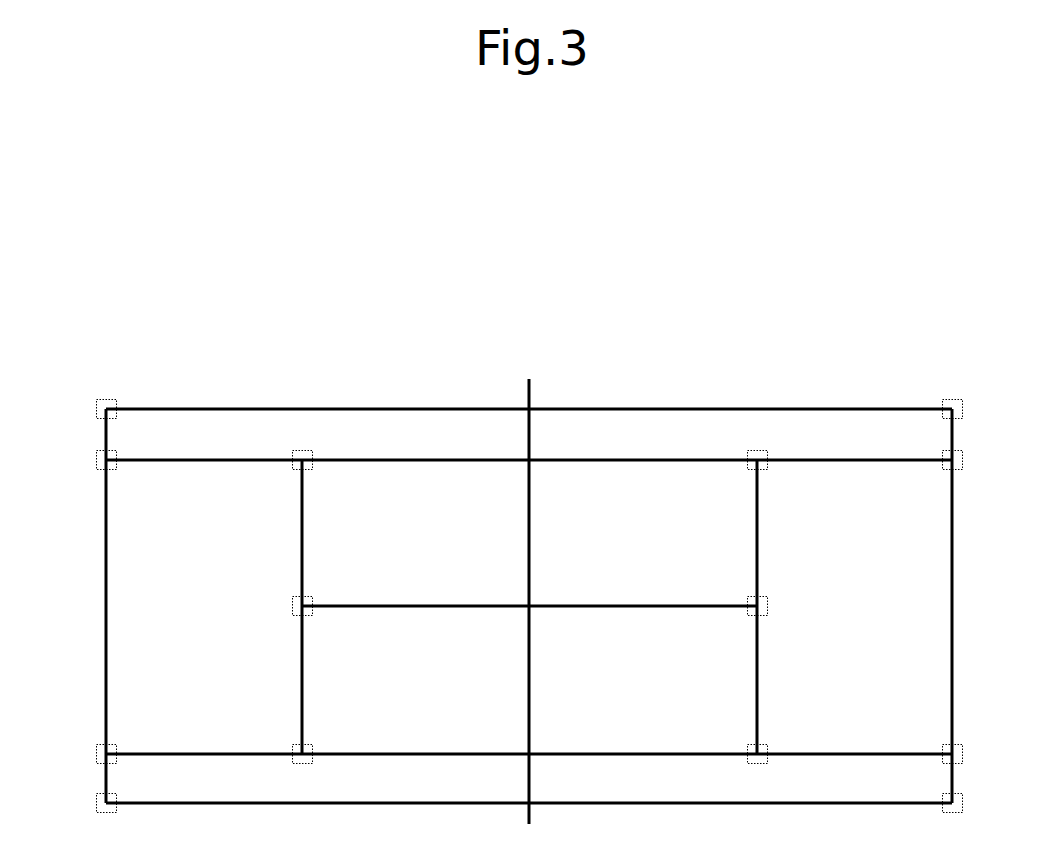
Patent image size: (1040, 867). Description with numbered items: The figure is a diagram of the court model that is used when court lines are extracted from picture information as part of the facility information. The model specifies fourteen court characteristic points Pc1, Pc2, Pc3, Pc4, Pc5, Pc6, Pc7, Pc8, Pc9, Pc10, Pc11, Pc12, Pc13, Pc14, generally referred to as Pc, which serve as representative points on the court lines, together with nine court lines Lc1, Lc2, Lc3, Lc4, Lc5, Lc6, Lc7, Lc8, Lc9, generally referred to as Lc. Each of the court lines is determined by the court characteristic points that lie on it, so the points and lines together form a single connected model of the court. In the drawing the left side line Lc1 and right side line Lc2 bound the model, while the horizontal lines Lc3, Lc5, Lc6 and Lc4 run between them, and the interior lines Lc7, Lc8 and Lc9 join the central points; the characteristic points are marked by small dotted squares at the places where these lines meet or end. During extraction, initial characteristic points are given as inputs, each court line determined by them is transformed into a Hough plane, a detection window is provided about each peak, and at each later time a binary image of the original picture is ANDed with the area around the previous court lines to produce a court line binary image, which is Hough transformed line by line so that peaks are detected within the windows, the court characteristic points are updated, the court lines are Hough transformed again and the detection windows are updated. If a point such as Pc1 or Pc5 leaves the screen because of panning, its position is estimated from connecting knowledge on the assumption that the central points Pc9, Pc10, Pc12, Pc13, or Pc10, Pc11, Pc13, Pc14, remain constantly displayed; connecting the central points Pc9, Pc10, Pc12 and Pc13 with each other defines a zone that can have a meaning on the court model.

The court characteristic point Pc1 is at (77, 414).
The court characteristic point Pc2 is at (77, 460).
The court characteristic point Pc3 is at (77, 754).
The court characteristic point Pc4 is at (77, 805).
The court characteristic point Pc5 is at (974, 414).
The court characteristic point Pc6 is at (975, 460).
The court characteristic point Pc7 is at (975, 754).
The court characteristic point Pc8 is at (974, 805).
The court characteristic point Pc9 is at (275, 472).
The court characteristic point Pc10 is at (275, 603).
The court characteristic point Pc11 is at (275, 742).
The court characteristic point Pc12 is at (781, 472).
The court characteristic point Pc13 is at (781, 603).
The court characteristic point Pc14 is at (781, 741).
The court line Lc1 is at (77, 606).
The court line Lc2 is at (978, 606).
The court line Lc3 is at (529, 393).
The court line Lc4 is at (529, 821).
The court line Lc5 is at (529, 476).
The court line Lc6 is at (529, 739).
The court line Lc7 is at (323, 607).
The court line Lc8 is at (731, 607).
The court line Lc9 is at (529, 622).